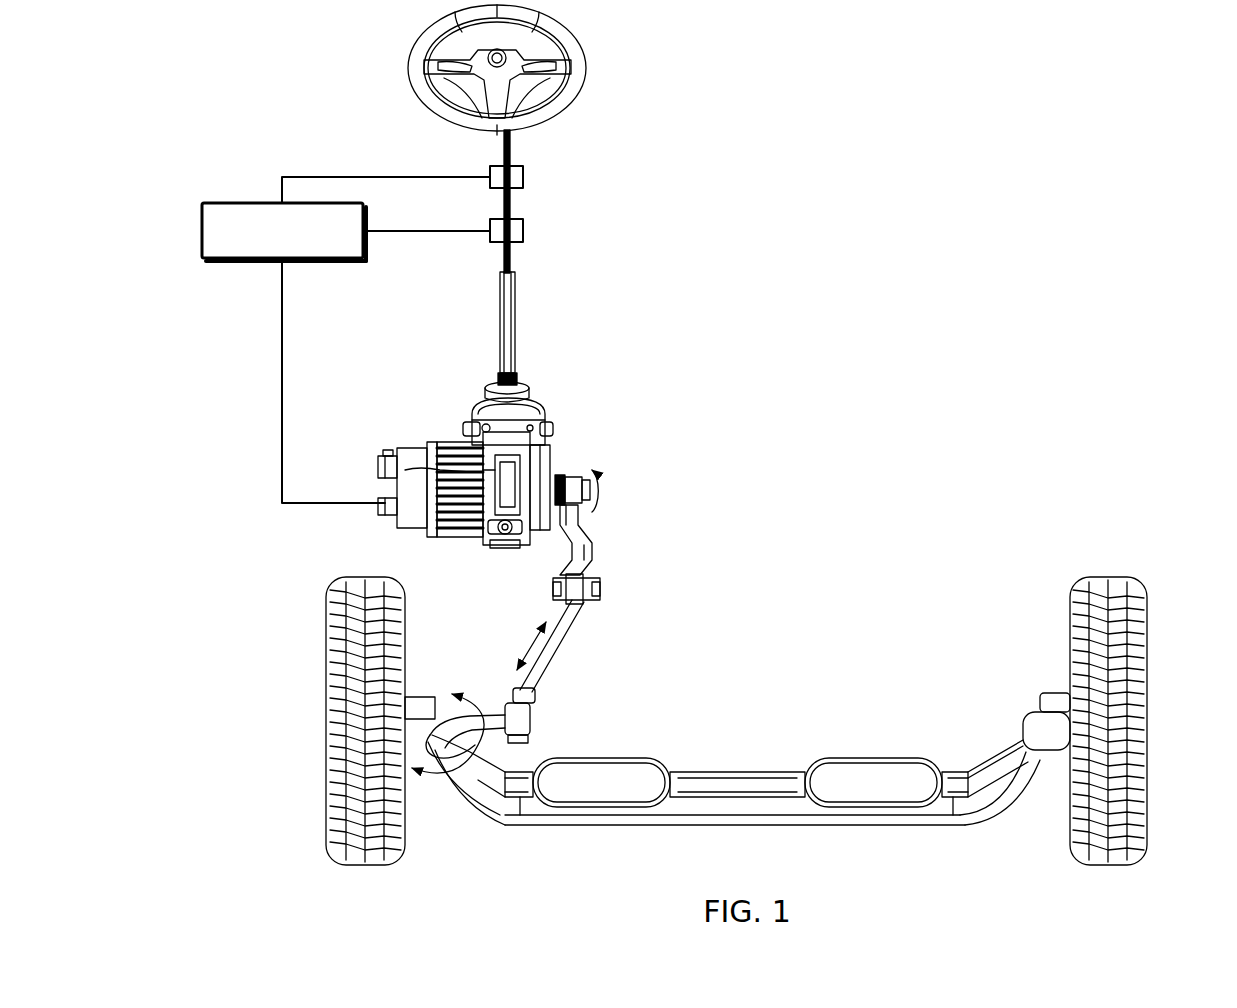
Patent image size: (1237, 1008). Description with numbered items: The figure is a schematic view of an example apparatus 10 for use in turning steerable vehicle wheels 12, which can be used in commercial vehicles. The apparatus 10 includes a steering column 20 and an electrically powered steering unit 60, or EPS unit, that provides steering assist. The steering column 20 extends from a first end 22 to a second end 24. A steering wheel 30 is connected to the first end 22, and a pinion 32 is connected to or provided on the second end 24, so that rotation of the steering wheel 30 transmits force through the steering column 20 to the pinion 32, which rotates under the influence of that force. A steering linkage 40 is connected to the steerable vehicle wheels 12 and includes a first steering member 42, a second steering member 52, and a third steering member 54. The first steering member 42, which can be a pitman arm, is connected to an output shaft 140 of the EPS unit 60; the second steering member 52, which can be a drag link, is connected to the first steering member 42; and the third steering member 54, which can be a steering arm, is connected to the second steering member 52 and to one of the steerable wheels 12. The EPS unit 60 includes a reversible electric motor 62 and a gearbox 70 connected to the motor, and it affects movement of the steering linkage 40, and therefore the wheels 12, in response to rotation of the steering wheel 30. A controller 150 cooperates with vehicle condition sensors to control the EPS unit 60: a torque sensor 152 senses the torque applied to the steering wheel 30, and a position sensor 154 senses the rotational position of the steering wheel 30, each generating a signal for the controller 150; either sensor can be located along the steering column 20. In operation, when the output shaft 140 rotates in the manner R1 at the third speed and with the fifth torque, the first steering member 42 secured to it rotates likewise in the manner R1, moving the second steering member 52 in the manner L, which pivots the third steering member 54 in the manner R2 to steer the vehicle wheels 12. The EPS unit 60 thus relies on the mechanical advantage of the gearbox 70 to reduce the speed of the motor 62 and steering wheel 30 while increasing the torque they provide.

The apparatus 10 is at (624, 344).
The steerable vehicle wheels 12 is at (326, 720).
The steering column 20 is at (520, 316).
The first end 22 is at (518, 276).
The second end 24 is at (480, 383).
The steering wheel 30 is at (410, 72).
The pinion 32 is at (468, 436).
The steering linkage 40 is at (642, 588).
The first steering member 42 is at (580, 542).
The second steering member 52 is at (575, 650).
The third steering member 54 is at (509, 822).
The electrically powered steering unit 60 is at (385, 443).
The reversible electric motor 62 is at (405, 522).
The gearbox 70 is at (486, 560).
The output shaft 140 is at (581, 470).
The controller 150 is at (202, 228).
The torque sensor 152 is at (523, 177).
The position sensor 154 is at (523, 231).
The rotation manner R1 is at (604, 490).
The pivoting manner R2 is at (480, 720).
The movement manner L is at (522, 656).